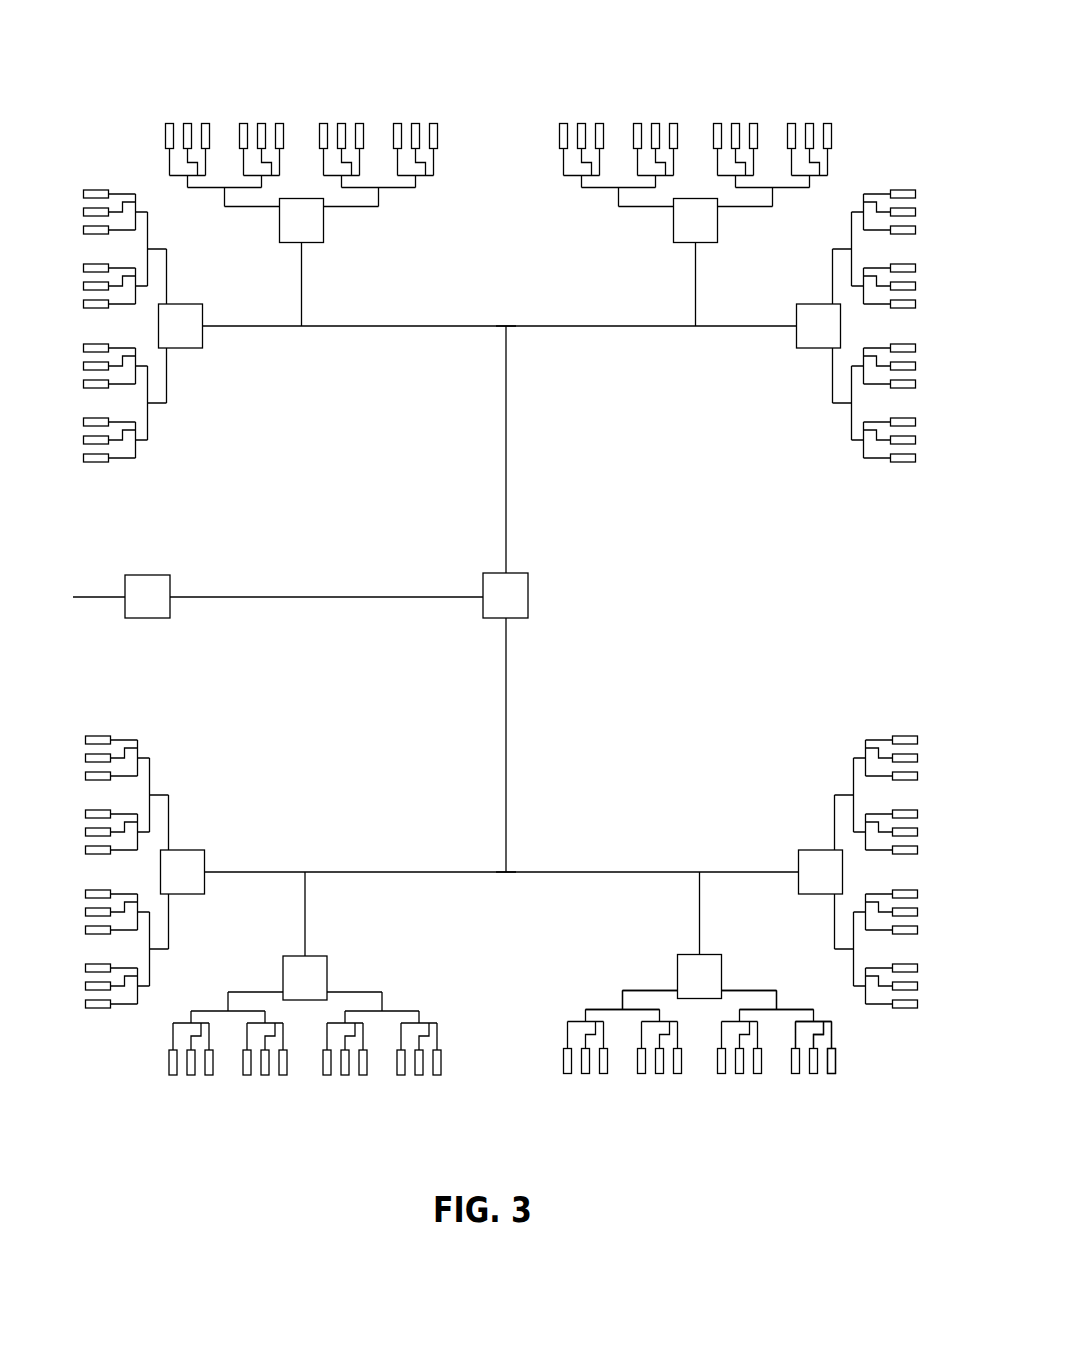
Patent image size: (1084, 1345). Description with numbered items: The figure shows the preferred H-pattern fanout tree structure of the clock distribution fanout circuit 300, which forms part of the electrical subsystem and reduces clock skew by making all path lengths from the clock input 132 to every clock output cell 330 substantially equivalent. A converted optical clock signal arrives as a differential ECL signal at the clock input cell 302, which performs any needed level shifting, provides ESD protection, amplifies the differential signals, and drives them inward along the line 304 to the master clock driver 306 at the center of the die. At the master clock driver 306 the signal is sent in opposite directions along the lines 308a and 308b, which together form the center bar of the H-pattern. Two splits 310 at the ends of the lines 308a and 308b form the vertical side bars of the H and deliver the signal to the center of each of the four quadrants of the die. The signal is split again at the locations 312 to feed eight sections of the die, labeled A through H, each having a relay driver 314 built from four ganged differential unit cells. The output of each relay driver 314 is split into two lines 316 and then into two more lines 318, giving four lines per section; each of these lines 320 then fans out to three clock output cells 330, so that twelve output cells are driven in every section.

The clock distribution fanout circuit 300 is at (507, 62).
The clock input 132 is at (92, 597).
The clock input cell 302 is at (150, 575).
The network bus 304 is at (314, 597).
The master clock driver 306 is at (530, 600).
The line 308a is at (506, 467).
The line 308b is at (506, 770).
The split 310 is at (506, 327).
The split location 312 is at (302, 326).
The relay driver 314 is at (687, 955).
The line 316 is at (744, 990).
The line 318 is at (797, 1008).
The sensor line 320 is at (795, 1031).
The clock output cell 330 is at (830, 1072).